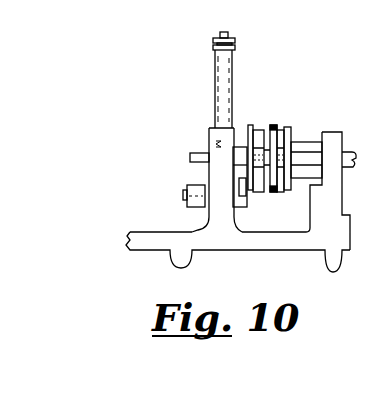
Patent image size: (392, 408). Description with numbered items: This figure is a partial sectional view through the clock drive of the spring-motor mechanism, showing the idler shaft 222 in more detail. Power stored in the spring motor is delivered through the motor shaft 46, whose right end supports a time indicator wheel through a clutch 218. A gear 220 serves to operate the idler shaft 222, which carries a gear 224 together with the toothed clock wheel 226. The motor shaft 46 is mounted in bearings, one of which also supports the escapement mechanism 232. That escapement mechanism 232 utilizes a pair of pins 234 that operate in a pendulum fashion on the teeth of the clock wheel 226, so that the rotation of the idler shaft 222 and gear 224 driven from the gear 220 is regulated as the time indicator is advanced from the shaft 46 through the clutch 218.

The clutch 218 is at (307, 142).
The gear 220 is at (257, 129).
The idler shaft 222 is at (337, 160).
The gear 224 is at (279, 186).
The clock wheel 226 is at (248, 127).
The escapement mechanism 232 is at (241, 208).
The pins 234 is at (246, 190).
The shaft 46 is at (351, 166).